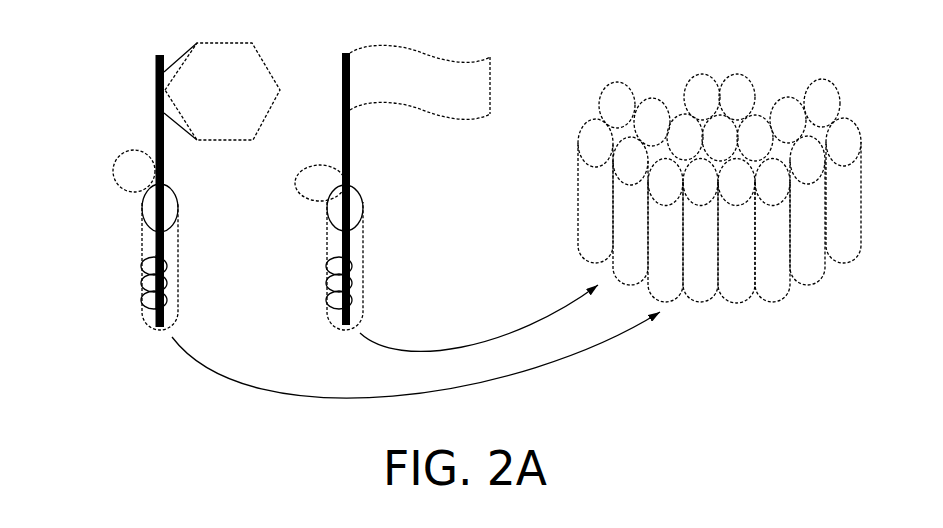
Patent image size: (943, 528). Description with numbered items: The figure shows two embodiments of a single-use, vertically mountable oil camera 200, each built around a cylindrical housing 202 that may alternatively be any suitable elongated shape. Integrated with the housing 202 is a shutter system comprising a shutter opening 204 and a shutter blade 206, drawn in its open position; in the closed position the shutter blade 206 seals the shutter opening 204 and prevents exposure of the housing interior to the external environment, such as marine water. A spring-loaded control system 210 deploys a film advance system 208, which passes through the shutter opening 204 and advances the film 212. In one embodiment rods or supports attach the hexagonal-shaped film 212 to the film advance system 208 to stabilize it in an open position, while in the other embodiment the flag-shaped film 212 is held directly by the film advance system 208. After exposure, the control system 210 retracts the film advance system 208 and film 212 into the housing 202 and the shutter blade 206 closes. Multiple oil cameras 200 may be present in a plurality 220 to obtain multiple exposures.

The oil camera 200 is at (222, 48).
The housing 202 is at (178, 260).
The shutter opening 204 is at (171, 196).
The shutter blade 206 is at (115, 157).
The film advance system 208 is at (157, 53).
The control system 210 is at (166, 300).
The film 212 is at (245, 102).
The plurality of oil cameras 220 is at (793, 40).